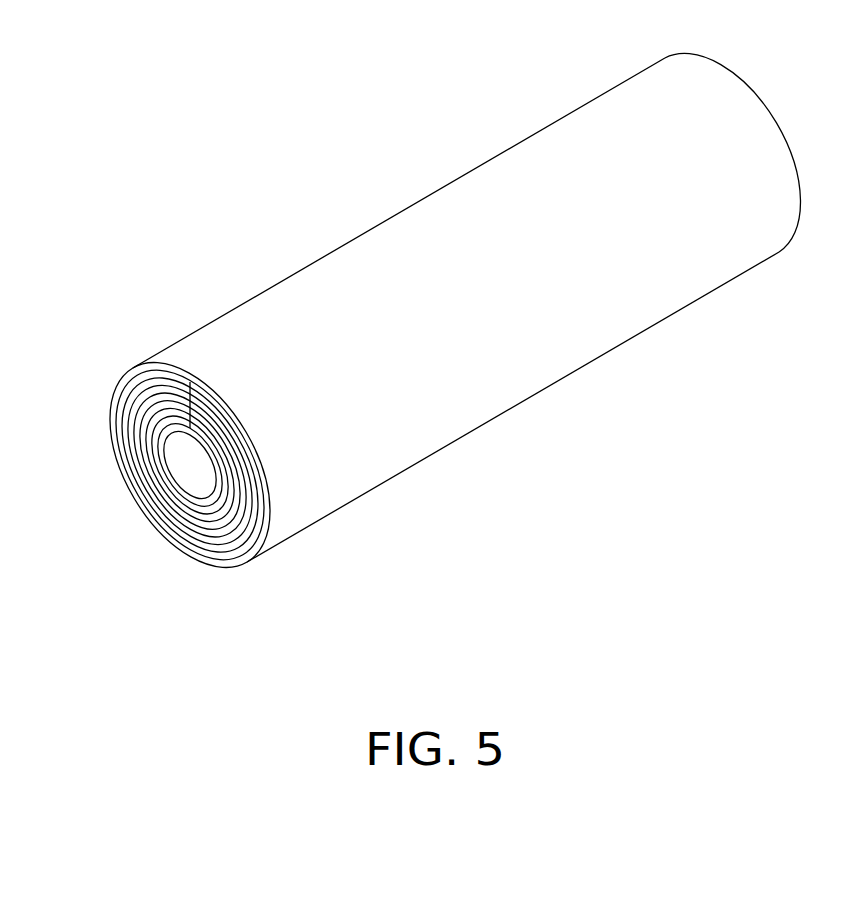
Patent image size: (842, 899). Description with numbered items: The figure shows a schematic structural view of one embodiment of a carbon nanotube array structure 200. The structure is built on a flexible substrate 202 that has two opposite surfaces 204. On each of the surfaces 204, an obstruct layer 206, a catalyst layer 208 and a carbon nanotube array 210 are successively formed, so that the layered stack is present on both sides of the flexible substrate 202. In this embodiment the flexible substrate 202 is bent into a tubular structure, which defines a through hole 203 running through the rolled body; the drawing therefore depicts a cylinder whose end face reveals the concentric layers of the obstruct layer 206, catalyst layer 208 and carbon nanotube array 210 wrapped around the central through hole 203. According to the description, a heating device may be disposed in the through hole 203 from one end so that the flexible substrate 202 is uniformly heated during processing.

The carbon nanotube array structure 200 is at (343, 60).
The flexible substrate 202 is at (140, 416).
The through hole 203 is at (190, 463).
The surfaces 204 is at (147, 394).
The obstruct layer 206 is at (144, 386).
The catalyst layer 208 is at (146, 376).
The carbon nanotube array 210 is at (160, 366).